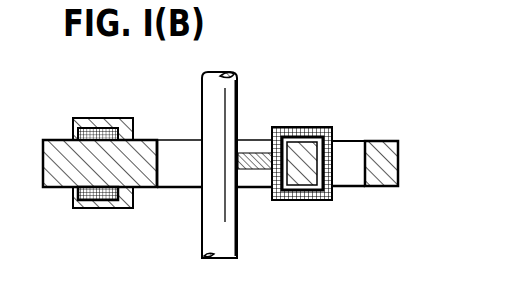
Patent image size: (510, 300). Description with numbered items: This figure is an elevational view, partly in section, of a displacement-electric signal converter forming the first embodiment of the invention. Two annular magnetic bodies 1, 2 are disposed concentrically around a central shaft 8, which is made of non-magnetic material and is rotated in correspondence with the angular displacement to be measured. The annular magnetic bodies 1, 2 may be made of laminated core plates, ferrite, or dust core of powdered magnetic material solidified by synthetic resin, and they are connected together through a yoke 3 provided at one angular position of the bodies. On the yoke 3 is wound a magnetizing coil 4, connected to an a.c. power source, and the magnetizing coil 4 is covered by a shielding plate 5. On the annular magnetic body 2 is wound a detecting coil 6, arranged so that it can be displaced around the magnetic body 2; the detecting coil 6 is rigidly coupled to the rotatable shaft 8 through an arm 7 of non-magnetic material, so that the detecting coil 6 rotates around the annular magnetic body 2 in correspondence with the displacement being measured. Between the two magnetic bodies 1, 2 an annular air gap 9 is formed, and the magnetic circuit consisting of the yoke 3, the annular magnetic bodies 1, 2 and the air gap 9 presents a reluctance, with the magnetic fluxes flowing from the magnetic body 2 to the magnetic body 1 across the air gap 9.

The annular magnetic body 1 is at (388, 141).
The annular magnetic body 2 is at (305, 127).
The yoke 3 is at (86, 193).
The magnetizing coil 4 is at (100, 130).
The shielding plate 5 is at (126, 208).
The detecting coil 6 is at (317, 201).
The arm 7 is at (255, 153).
The central shaft 8 is at (237, 230).
The annular air gap 9 is at (347, 168).